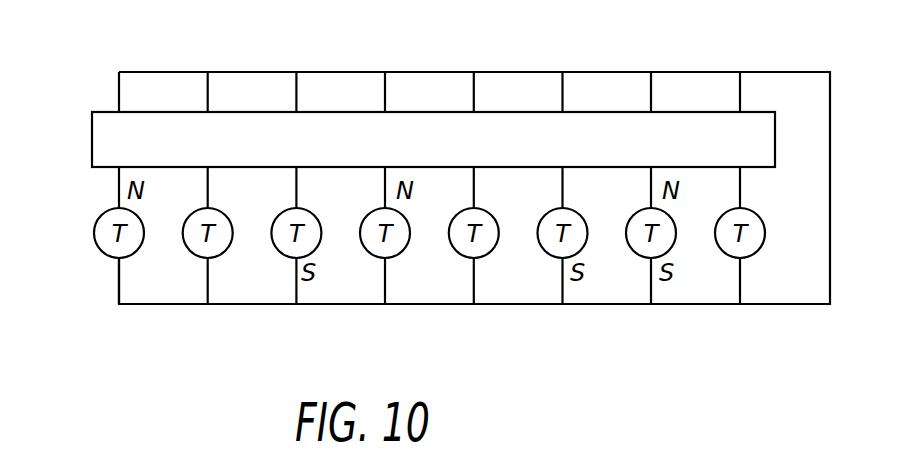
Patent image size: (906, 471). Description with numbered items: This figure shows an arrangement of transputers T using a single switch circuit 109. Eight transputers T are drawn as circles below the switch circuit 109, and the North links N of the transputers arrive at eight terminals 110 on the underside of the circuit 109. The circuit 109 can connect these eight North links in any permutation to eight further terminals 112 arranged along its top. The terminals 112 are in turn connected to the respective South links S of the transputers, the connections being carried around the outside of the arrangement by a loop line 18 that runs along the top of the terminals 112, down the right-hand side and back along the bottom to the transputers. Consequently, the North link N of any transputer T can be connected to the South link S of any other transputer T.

The circuit loop 18 is at (485, 188).
The switch circuit 109 is at (110, 138).
The terminals 110 is at (208, 170).
The further terminals 112 is at (119, 111).